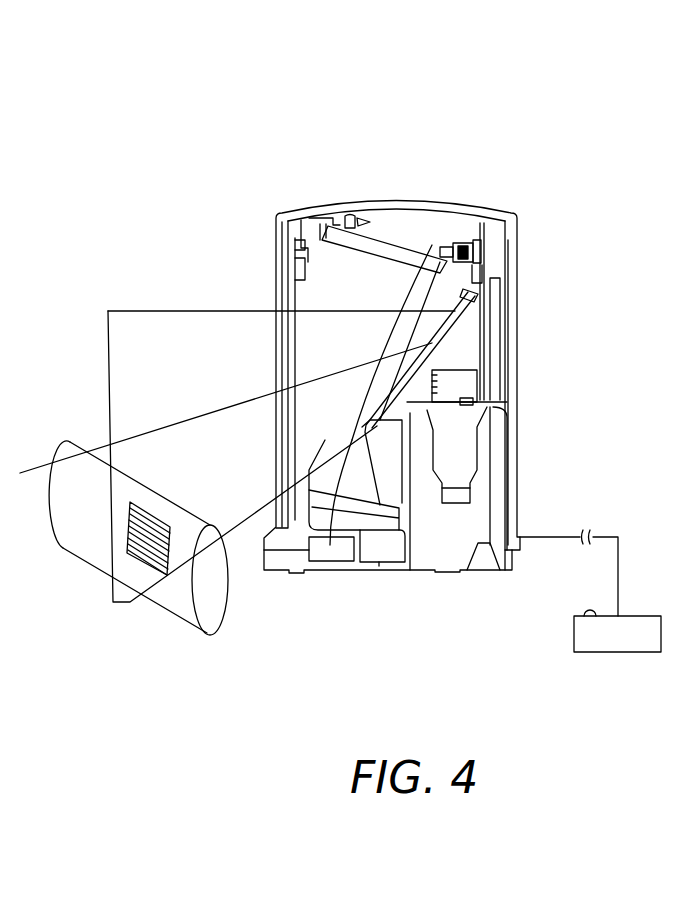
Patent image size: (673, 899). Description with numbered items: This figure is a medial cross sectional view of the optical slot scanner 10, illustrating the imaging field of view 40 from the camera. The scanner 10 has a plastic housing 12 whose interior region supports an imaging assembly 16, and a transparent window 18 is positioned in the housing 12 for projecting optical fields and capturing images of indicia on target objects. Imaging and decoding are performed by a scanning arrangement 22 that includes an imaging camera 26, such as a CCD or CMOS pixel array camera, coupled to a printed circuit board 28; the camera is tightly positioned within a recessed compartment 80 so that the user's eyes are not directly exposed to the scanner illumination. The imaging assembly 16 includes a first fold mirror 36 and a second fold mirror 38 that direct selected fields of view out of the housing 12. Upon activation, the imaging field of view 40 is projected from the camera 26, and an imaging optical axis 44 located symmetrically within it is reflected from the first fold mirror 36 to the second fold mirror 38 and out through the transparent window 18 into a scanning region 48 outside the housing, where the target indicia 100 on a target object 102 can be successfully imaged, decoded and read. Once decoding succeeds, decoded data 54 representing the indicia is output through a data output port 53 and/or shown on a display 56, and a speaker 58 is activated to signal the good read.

The optical slot scanner 10 is at (548, 112).
The housing 12 is at (358, 206).
The imaging assembly 16 is at (176, 296).
The transparent window 18 is at (276, 284).
The scanning arrangement 22 is at (536, 276).
The imaging camera 26 is at (484, 262).
The printed circuit board 28 is at (486, 333).
The first fold mirror 36 is at (447, 242).
The second fold mirror 38 is at (330, 545).
The imaging field of view 40 is at (208, 449).
The imaging optical axis 44 is at (33, 470).
The scanning region 48 is at (100, 318).
The data output port 53 is at (518, 537).
The decoded data 54 is at (572, 536).
The display 56 is at (641, 653).
The speaker 58 is at (588, 611).
The recessed compartment 80 is at (472, 298).
The target indicia 100 is at (147, 563).
The target object 102 is at (63, 550).